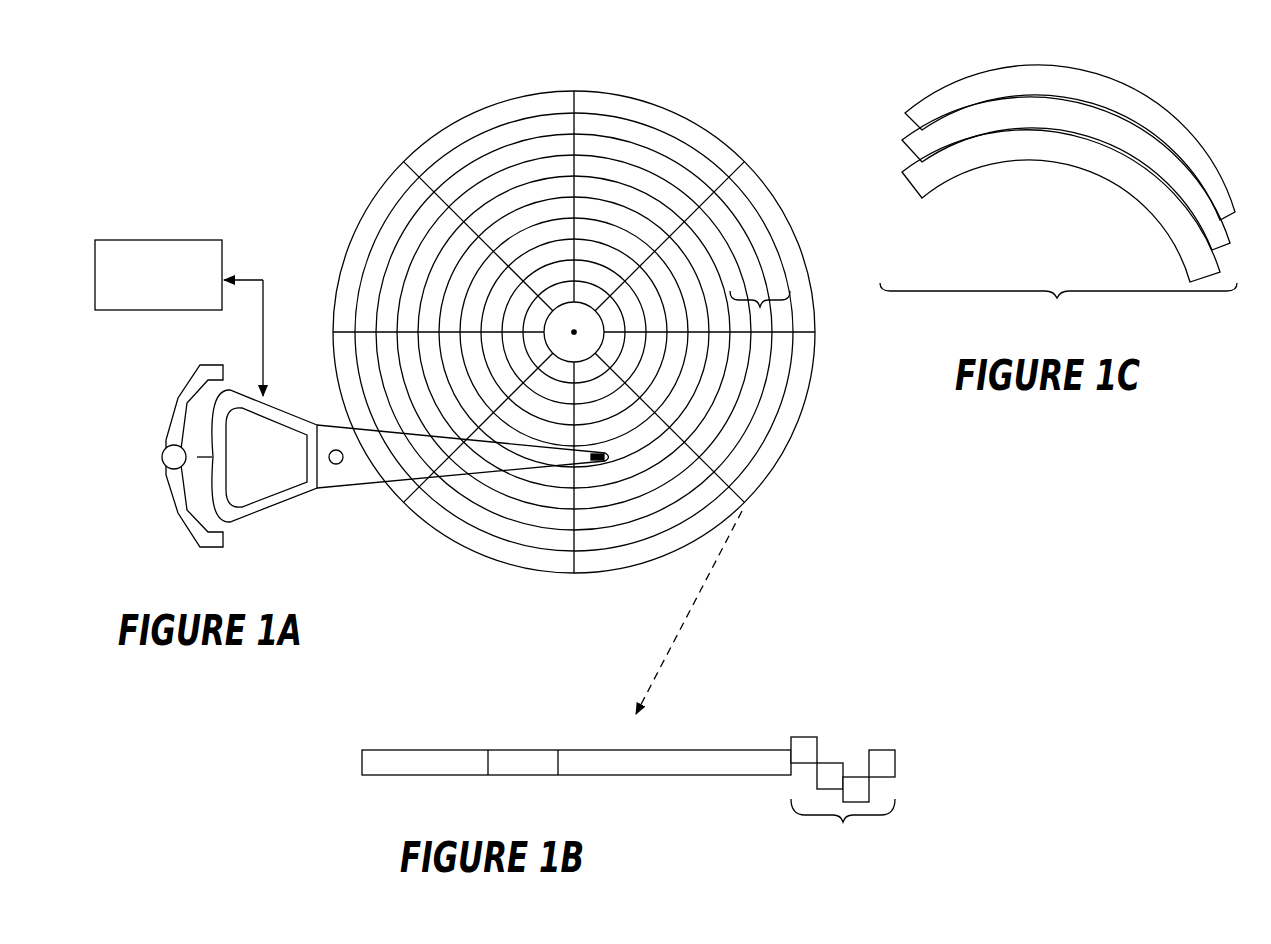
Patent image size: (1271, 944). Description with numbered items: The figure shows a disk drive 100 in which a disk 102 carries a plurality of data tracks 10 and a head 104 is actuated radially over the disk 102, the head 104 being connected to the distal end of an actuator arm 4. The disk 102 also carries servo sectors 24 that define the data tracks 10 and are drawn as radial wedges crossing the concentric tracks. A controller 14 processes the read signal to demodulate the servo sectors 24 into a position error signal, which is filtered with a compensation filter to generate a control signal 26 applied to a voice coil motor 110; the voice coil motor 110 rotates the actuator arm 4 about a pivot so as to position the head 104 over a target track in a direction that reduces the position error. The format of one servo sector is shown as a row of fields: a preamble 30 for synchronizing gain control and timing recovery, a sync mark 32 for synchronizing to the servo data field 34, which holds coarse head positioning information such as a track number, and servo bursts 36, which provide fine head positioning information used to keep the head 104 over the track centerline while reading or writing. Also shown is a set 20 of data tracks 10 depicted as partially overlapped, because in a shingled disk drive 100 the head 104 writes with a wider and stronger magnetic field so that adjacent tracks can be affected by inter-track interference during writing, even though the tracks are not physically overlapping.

In FIG. 1A, the disk drive 100 is at (202, 140).
In FIG. 1A, the disk 102 is at (366, 151).
In FIG. 1A, the head 104 is at (605, 447).
In FIG. 1A, the voice coil motor 110 is at (257, 517).
In FIG. 1A, the actuator arm 4 is at (333, 489).
In FIG. 1A, the data tracks 10 is at (743, 249).
In FIG. 1A, the controller 14 is at (160, 240).
In FIG. 1A, the set of data tracks 20 is at (760, 312).
In FIG. 1C, the set of data tracks 20 is at (1058, 197).
In FIG. 1A, the servo sectors 24 is at (576, 91).
In FIG. 1A, the control signal 26 is at (263, 333).
In FIG. 1B, the preamble 30 is at (415, 776).
In FIG. 1B, the sync mark 32 is at (517, 776).
In FIG. 1B, the servo data field 34 is at (671, 776).
In FIG. 1B, the servo bursts 36 is at (858, 736).